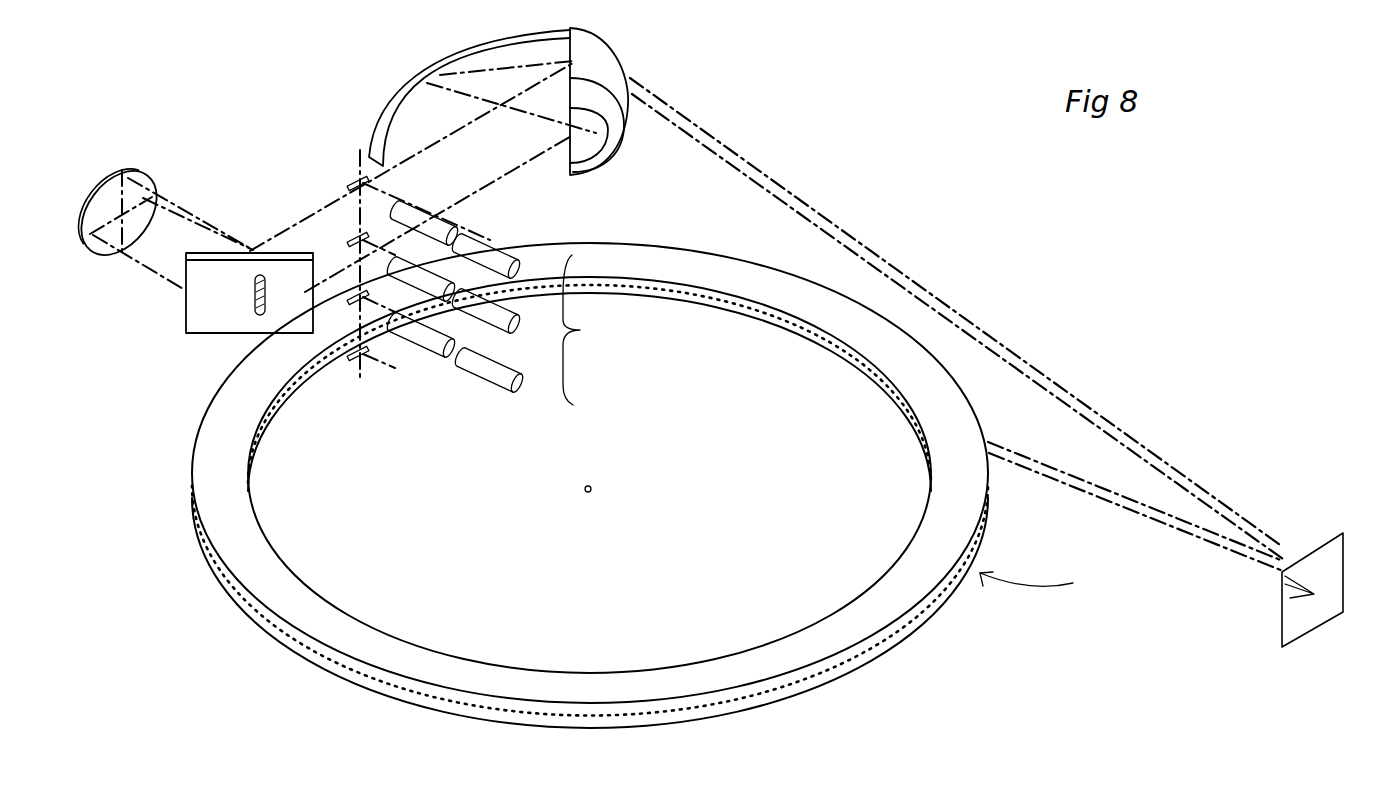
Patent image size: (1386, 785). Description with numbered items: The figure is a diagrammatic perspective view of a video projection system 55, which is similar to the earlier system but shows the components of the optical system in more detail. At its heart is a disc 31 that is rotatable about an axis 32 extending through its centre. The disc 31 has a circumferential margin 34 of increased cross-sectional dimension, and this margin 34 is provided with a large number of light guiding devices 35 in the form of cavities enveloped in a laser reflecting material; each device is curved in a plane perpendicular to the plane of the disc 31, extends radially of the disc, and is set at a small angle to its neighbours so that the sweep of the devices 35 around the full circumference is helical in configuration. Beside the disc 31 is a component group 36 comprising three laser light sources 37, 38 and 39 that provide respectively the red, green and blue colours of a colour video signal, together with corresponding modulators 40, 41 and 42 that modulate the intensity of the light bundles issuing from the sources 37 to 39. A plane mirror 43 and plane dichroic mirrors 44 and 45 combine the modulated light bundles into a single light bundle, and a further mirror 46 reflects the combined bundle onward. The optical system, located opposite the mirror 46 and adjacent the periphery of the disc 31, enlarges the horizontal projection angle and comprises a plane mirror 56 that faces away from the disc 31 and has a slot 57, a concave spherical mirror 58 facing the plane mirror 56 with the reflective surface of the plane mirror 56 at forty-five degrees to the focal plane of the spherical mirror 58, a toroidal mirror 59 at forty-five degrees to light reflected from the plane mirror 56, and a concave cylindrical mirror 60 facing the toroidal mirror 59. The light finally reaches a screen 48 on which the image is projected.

The disc 31 is at (672, 246).
The axis 32 is at (589, 486).
The circumferential margin 34 is at (892, 598).
The light guiding devices 35 is at (882, 390).
The component group 36 is at (598, 330).
The laser light source 37 is at (477, 378).
The laser light source 38 is at (477, 327).
The laser light source 39 is at (528, 266).
The modulator 40 is at (422, 342).
The modulator 41 is at (392, 312).
The modulator 42 is at (470, 218).
The plane mirror 43 is at (362, 175).
The plane dichroic mirror 44 is at (348, 240).
The plane dichroic mirror 45 is at (349, 294).
The mirror 46 is at (358, 360).
The screen 48 is at (1308, 557).
The video projection system 55 is at (1046, 584).
The plane mirror 56 is at (186, 302).
The slot 57 is at (250, 300).
The concave spherical mirror 58 is at (127, 167).
The toroidal mirror 59 is at (598, 56).
The concave cylindrical mirror 60 is at (476, 52).